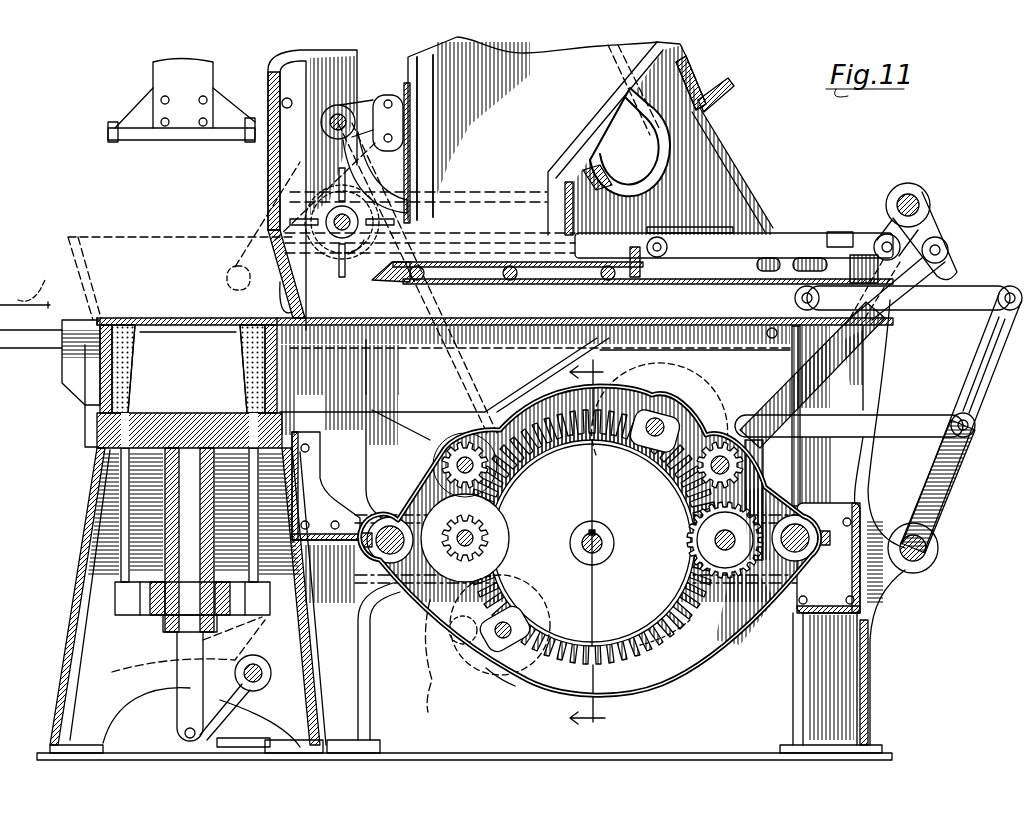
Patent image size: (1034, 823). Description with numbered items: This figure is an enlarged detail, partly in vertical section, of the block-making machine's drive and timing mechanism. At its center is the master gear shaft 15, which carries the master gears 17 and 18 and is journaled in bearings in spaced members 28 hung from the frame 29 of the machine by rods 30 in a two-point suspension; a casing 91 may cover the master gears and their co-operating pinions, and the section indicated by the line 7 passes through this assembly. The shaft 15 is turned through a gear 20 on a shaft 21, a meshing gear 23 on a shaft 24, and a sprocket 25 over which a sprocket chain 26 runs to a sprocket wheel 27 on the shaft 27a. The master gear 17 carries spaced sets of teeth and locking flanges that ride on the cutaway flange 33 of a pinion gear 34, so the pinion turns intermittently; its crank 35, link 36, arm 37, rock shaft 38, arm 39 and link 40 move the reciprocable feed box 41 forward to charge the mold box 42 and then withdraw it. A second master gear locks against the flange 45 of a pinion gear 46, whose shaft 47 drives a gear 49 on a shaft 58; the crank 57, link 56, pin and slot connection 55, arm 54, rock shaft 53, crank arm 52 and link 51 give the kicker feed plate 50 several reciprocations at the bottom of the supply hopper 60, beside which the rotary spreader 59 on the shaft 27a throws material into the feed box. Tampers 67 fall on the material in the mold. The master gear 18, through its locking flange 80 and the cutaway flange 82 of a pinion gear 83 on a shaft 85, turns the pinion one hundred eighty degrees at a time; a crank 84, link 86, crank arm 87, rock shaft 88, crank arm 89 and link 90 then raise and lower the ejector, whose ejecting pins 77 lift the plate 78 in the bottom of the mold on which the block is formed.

The section line 7- 7 is at (587, 544).
The master gear shaft 15 is at (614, 545).
The master gear 17 is at (646, 482).
The master gear 18 is at (638, 640).
The gear 20 is at (474, 540).
The shaft 21 is at (440, 572).
The gear 23 is at (478, 470).
The shaft 24 is at (456, 440).
The sprocket 25 is at (440, 442).
The sprocket chain 26 is at (472, 402).
The sprocket wheel 27 is at (358, 247).
The shaft 27a is at (325, 222).
The spaced members 28 is at (690, 682).
The frame 29 is at (866, 656).
The rods 30 is at (385, 548).
The flange 33 is at (660, 404).
The pinion gear 34 is at (682, 420).
The crank 35 is at (692, 385).
The link 36 is at (925, 422).
The arm 37 is at (944, 492).
The rock shaft 38 is at (938, 549).
The arm 39 is at (988, 378).
The link 40 is at (982, 292).
The feed box 41 is at (100, 300).
The mold box 42 is at (105, 360).
The flange 45 is at (760, 612).
The pinion gear 46 is at (722, 522).
The shaft 47 is at (718, 542).
The gear 49 is at (742, 470).
The kicker feed plate 50 is at (518, 262).
The link 51 is at (722, 242).
The crank arm 52 is at (882, 232).
The rock shaft 53 is at (910, 200).
The arm 54 is at (935, 215).
The pin and slot connection 55 is at (945, 262).
The link 56 is at (840, 395).
The crank 57 is at (752, 490).
The shaft 58 is at (740, 470).
The rotary spreader 59 is at (310, 206).
The supply hopper 60 is at (690, 66).
The tampers 67 is at (125, 132).
The ejecting pins 77 is at (125, 530).
The plate 78 is at (100, 447).
The locking flange 80 is at (718, 660).
The flange 82 is at (522, 670).
The pinion gear 83 is at (488, 660).
The crank 84 is at (503, 690).
The shaft 85 is at (540, 626).
The link 86 is at (396, 661).
The crank arm 87 is at (176, 649).
The rock shaft 88 is at (262, 692).
The crank arm 89 is at (228, 750).
The link 90 is at (185, 705).
The casing 91 is at (648, 700).